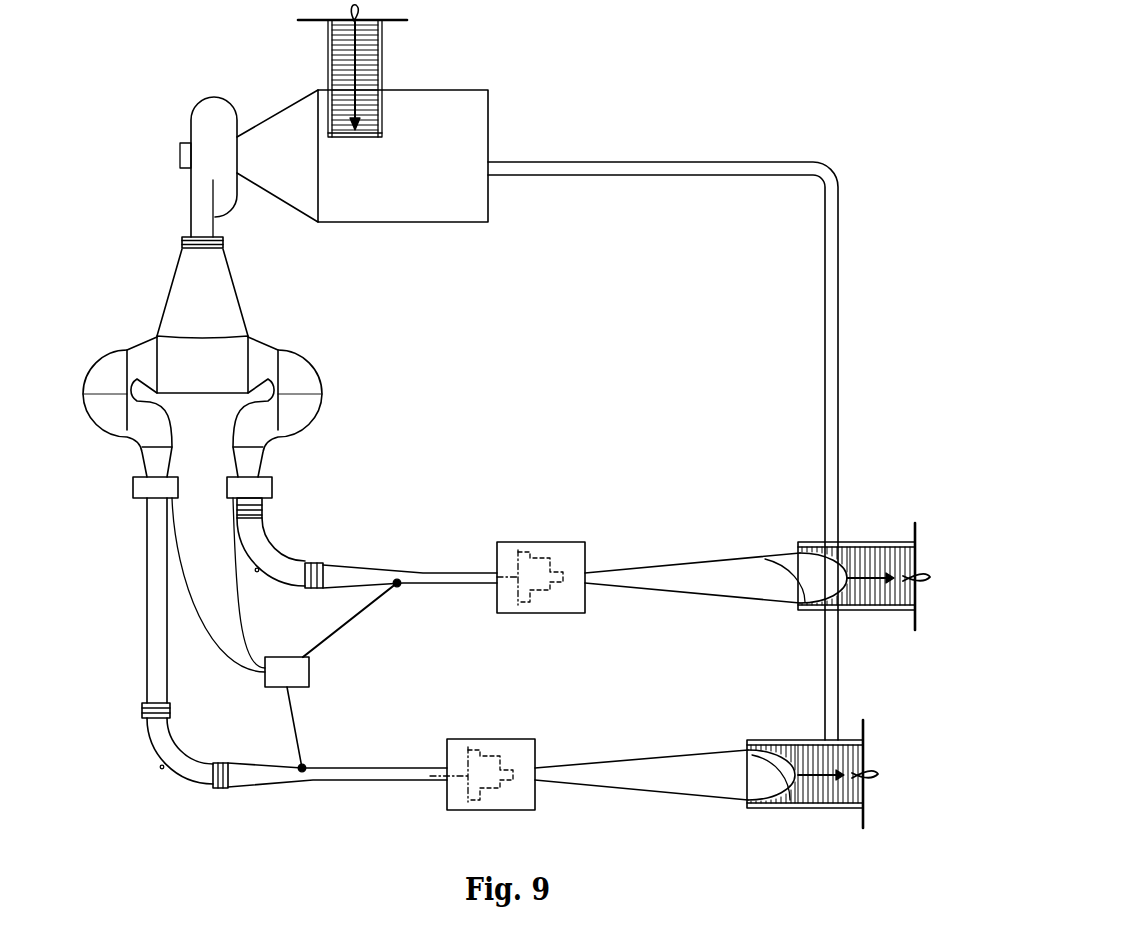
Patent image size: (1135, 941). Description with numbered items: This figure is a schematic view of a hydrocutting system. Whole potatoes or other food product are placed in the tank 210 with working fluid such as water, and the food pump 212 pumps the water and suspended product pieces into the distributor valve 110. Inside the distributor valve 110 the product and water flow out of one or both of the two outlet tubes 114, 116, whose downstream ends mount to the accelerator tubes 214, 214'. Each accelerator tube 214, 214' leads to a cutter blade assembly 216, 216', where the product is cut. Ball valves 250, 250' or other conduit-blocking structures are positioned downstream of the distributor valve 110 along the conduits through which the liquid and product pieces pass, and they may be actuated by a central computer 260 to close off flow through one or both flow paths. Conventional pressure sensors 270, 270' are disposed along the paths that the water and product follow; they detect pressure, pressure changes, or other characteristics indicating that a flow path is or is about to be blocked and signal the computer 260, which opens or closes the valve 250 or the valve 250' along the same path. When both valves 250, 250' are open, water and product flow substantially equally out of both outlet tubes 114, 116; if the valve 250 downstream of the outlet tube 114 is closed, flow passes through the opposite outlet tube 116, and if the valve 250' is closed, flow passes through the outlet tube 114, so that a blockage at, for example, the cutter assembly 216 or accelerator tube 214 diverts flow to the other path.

The distributor valve 110 is at (259, 310).
The outlet tube 114 is at (310, 381).
The outlet tube 116 is at (106, 365).
The tank 210 is at (441, 173).
The food pump 212 is at (182, 182).
The accelerator tube 214 is at (367, 553).
The accelerator tube 214' is at (294, 661).
The cutter blade assembly 216 is at (543, 558).
The cutter blade assembly 216' is at (485, 755).
The ball valve 250 is at (277, 507).
The ball valve 250' is at (139, 527).
The central computer 260 is at (304, 684).
The pressure sensor 270 is at (424, 603).
The pressure sensor 270' is at (329, 729).